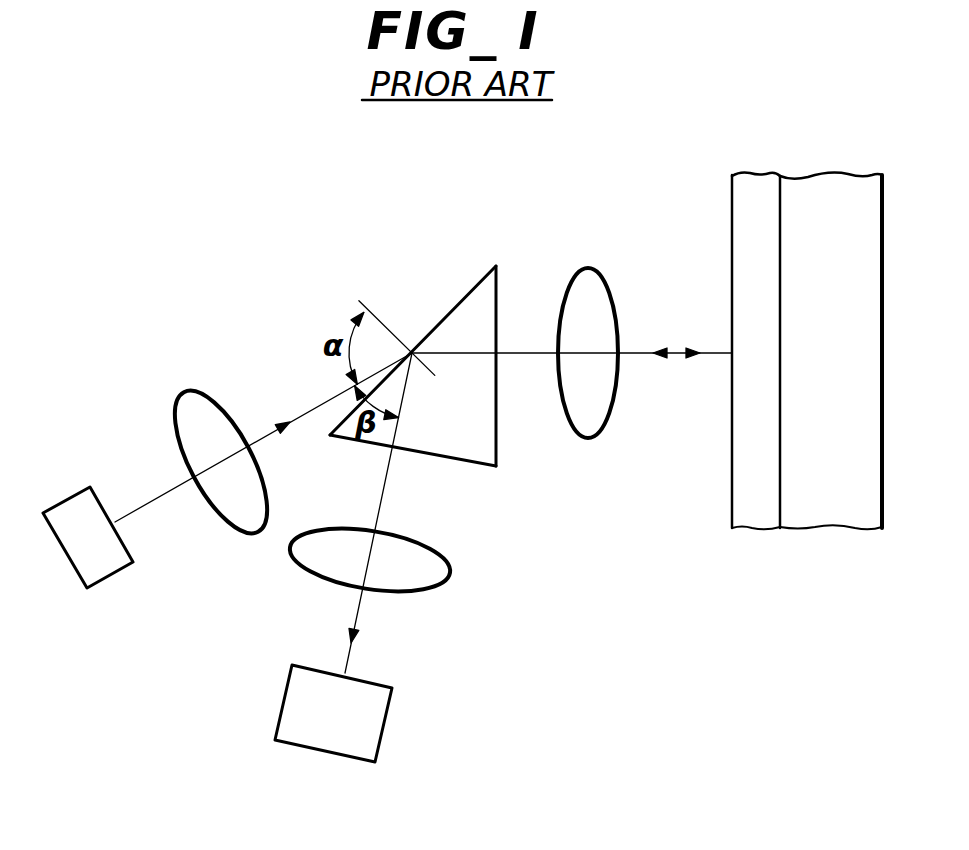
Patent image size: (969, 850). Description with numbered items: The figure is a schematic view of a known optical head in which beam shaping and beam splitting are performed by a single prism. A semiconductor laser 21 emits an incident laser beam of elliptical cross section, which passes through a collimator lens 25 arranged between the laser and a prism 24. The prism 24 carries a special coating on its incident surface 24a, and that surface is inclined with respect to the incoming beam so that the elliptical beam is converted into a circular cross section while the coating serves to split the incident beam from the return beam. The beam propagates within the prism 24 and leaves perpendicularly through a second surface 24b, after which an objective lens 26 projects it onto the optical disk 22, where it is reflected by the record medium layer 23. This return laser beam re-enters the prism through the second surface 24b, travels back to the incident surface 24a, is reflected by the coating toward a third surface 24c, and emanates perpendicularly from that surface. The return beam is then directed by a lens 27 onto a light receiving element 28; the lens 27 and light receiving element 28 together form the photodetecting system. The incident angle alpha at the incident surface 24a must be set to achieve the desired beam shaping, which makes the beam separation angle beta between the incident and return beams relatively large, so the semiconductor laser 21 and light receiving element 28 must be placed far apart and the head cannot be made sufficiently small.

The semiconductor laser 21 is at (66, 500).
The optical disk 22 is at (803, 398).
The record medium layer 23 is at (760, 513).
The prism 24 is at (448, 365).
The incident surface 24a is at (448, 312).
The second surface 24b is at (498, 303).
The third surface 24c is at (447, 460).
The collimator lens 25 is at (184, 392).
The objective lens 26 is at (588, 268).
The lens 27 is at (315, 573).
The light receiving element 28 is at (392, 718).